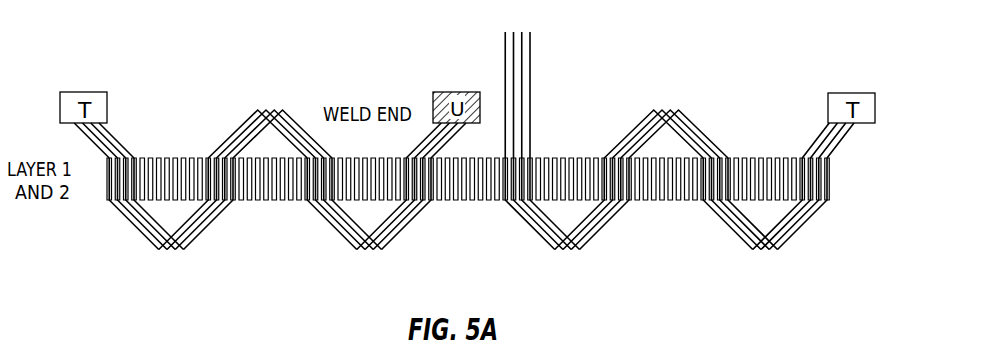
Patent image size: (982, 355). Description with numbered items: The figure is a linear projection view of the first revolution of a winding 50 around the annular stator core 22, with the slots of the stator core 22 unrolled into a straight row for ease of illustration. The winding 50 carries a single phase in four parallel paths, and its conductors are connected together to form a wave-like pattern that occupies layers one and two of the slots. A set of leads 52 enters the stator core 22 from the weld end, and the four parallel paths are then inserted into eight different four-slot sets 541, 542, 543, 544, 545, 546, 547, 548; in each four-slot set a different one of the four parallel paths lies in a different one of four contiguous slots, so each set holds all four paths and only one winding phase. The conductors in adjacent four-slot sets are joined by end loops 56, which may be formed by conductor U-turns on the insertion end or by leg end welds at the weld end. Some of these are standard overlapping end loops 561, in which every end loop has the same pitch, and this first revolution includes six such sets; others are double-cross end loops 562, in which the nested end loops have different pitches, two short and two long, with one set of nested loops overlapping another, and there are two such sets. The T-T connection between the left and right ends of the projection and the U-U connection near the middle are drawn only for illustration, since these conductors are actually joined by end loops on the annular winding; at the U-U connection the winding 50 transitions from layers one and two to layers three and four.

The stator core 22 is at (832, 187).
The winding 50 is at (726, 116).
The leads 52 is at (530, 61).
The end loops 56 is at (266, 112).
The standard end loops 561 is at (660, 114).
The double-cross end loops 562 is at (583, 239).
The four-slot set 541 is at (492, 226).
The four-slot set 542 is at (636, 223).
The four-slot set 543 is at (704, 235).
The four-slot set 544 is at (828, 224).
The four-slot set 545 is at (89, 210).
The four-slot set 546 is at (233, 234).
The four-slot set 547 is at (299, 230).
The four-slot set 548 is at (419, 238).